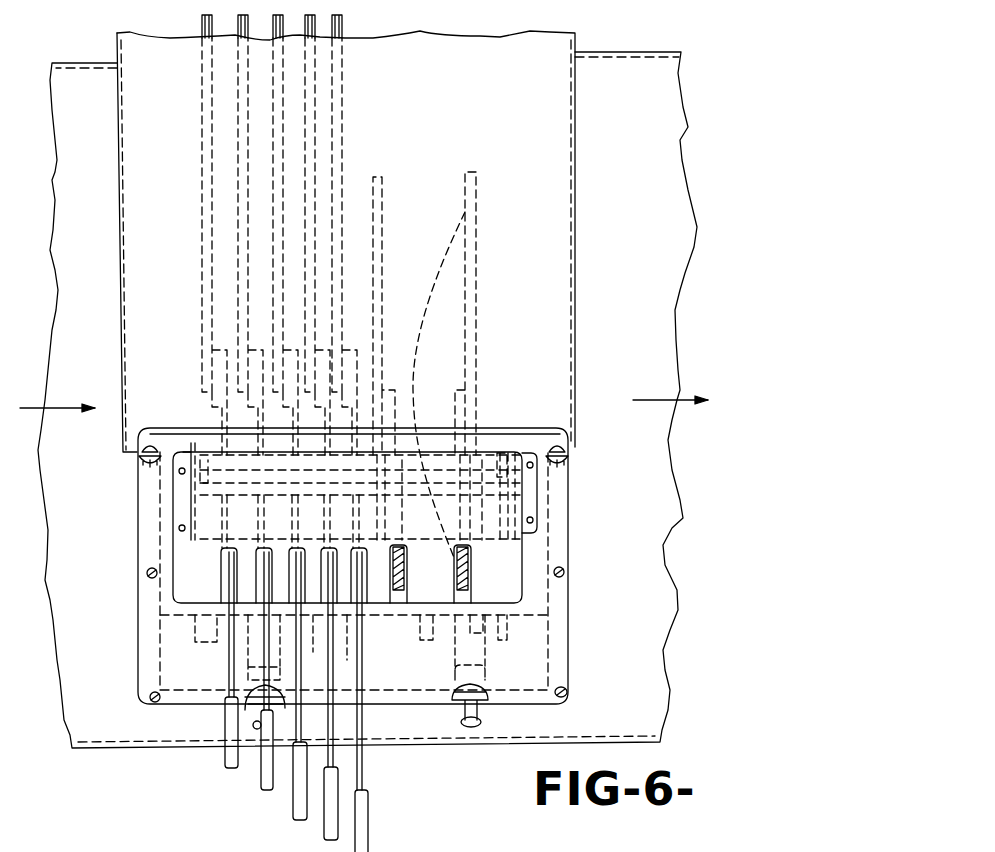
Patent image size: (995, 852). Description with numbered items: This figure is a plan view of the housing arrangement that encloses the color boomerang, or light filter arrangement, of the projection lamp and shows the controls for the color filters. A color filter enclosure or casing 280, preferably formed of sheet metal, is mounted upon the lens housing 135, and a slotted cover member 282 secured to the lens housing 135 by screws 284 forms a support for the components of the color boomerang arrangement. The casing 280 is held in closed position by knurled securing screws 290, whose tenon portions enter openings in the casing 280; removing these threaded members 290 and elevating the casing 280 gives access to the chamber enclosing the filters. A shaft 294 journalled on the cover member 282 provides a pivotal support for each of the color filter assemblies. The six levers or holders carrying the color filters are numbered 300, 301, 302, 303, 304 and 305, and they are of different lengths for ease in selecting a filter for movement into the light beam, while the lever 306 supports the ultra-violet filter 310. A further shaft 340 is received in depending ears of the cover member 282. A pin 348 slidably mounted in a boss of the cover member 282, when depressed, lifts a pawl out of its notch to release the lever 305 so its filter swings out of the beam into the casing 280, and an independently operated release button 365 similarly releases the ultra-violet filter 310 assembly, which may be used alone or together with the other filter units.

The lens housing 135 is at (623, 56).
The color filter enclosure or casing 280 is at (577, 268).
The slotted cover member 282 is at (569, 522).
The screws 284 is at (148, 571).
The knurled securing screws 290 is at (140, 455).
The shaft 294 is at (503, 473).
The lever or holder 300 is at (232, 672).
The lever or holder 301 is at (262, 753).
The lever or holder 302 is at (300, 785).
The lever or holder 303 is at (332, 818).
The lever or holder 304 is at (362, 807).
The lever or holder 305 is at (408, 585).
The lever supporting the ultraviolet filter 306 is at (452, 585).
The ultra-violet filter 310 is at (437, 267).
The shaft 340 is at (212, 555).
The pin 348 is at (254, 724).
The release button 365 is at (462, 715).